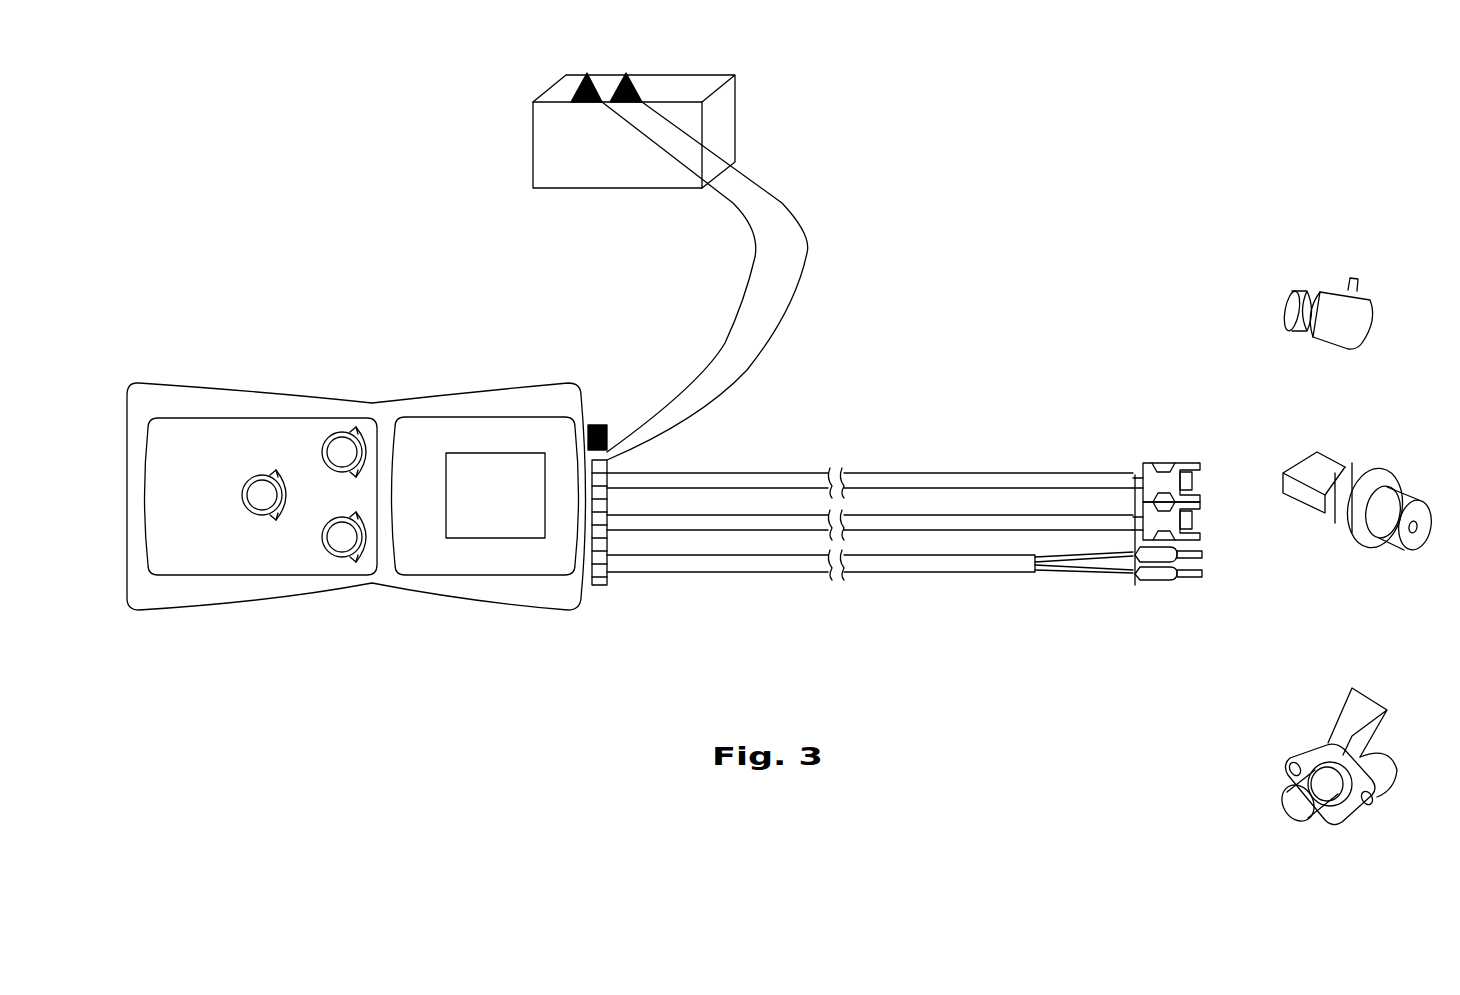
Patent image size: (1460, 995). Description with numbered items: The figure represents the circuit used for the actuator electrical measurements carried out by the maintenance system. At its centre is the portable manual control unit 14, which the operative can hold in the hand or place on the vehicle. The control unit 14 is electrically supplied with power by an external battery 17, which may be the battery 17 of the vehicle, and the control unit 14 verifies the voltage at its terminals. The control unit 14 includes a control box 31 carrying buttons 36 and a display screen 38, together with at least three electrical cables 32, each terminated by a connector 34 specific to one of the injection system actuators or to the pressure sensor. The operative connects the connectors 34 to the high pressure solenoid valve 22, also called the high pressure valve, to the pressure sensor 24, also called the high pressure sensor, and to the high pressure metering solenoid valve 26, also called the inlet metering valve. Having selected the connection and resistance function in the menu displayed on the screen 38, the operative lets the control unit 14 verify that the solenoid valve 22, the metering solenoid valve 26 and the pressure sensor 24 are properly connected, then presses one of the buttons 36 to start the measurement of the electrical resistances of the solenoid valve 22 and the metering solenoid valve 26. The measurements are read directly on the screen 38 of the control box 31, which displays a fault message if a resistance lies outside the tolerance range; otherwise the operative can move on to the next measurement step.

The manual control unit 14 is at (110, 351).
The external battery 17 is at (545, 147).
The high pressure solenoid valve 22 is at (1358, 330).
The pressure sensor 24 is at (1357, 477).
The high pressure metering solenoid valve 26 is at (1345, 714).
The control box 31 is at (469, 402).
The electrical cables 32 is at (777, 525).
The connector 34 is at (1162, 476).
The buttons 36 is at (257, 478).
The display screen 38 is at (490, 525).